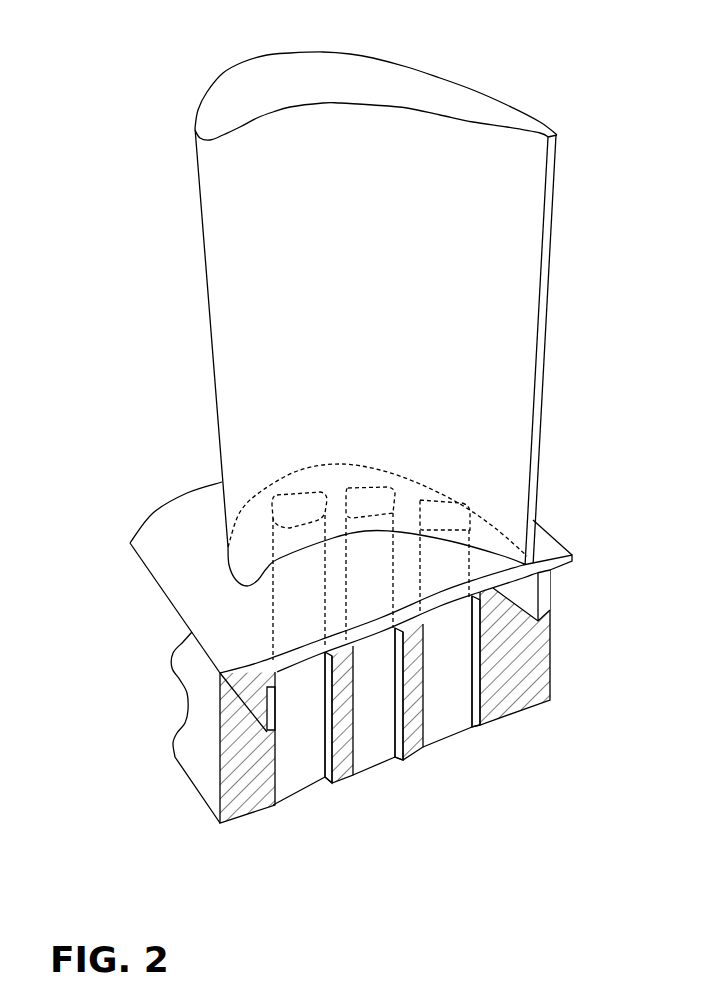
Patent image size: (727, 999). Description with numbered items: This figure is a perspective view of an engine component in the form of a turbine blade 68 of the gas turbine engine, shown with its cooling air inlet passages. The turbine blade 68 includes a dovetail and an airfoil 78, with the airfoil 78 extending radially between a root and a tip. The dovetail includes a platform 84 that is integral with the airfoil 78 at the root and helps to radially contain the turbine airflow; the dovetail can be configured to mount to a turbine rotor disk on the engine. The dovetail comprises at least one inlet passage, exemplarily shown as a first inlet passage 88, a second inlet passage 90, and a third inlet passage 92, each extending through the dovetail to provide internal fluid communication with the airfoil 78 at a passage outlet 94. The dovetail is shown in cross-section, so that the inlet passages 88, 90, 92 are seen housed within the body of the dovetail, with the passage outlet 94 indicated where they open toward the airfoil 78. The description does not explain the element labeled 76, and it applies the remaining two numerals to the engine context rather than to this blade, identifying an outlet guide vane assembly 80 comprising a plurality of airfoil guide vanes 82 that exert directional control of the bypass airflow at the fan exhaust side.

The turbine blade 68 is at (88, 141).
The root / rib structure 76 is at (207, 718).
The airfoil 78 is at (208, 383).
The outlet guide vane assembly 80 is at (275, 88).
The airfoil guide vanes 82 is at (495, 545).
The platform 84 is at (190, 575).
The first inlet passage 88 is at (305, 800).
The second inlet passage 90 is at (378, 780).
The third inlet passage 92 is at (445, 752).
The passage outlet 94 is at (290, 493).